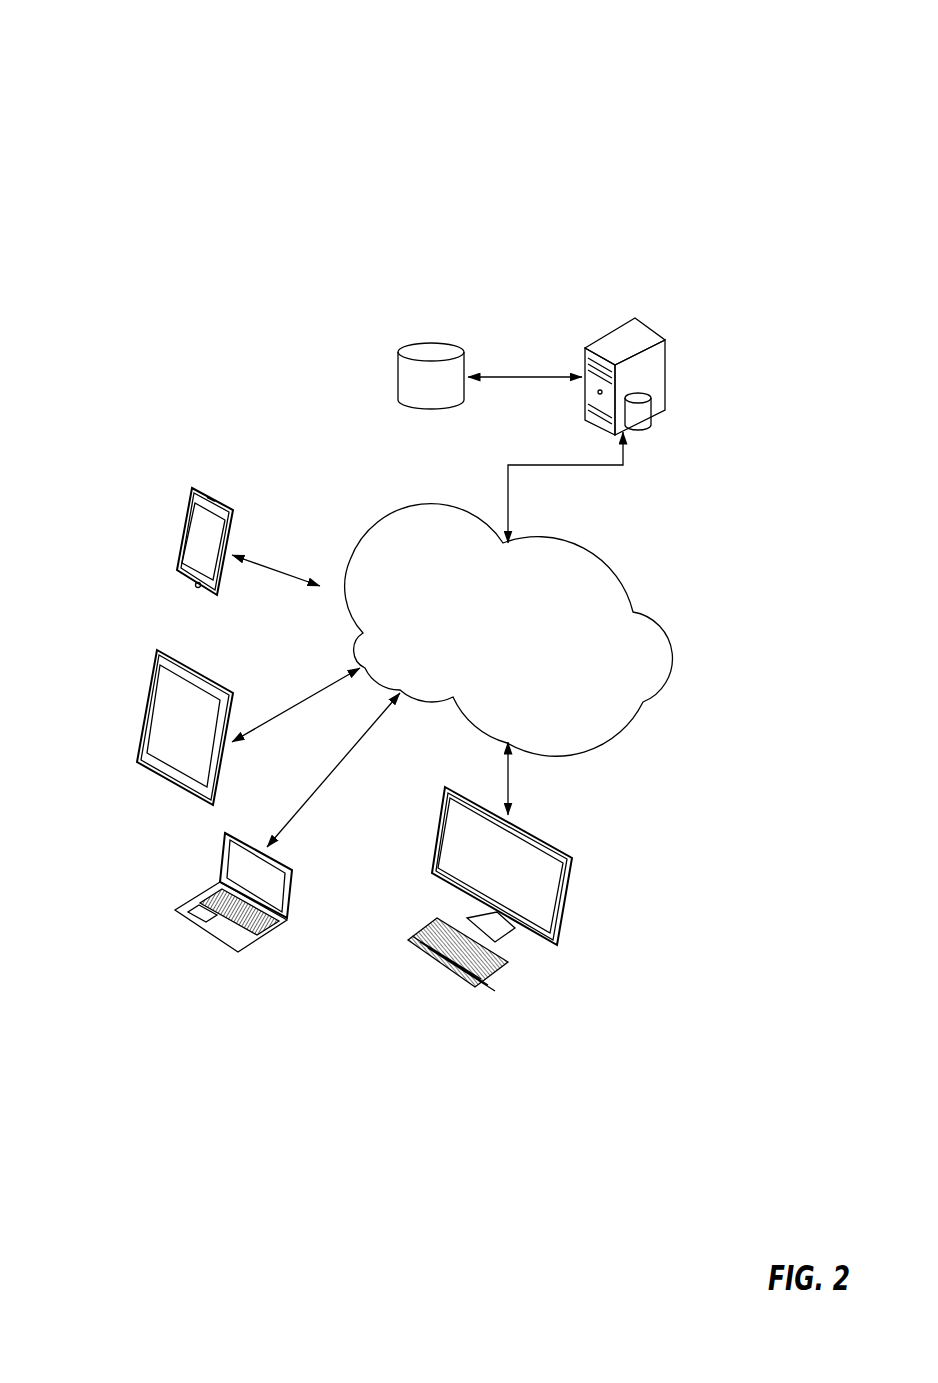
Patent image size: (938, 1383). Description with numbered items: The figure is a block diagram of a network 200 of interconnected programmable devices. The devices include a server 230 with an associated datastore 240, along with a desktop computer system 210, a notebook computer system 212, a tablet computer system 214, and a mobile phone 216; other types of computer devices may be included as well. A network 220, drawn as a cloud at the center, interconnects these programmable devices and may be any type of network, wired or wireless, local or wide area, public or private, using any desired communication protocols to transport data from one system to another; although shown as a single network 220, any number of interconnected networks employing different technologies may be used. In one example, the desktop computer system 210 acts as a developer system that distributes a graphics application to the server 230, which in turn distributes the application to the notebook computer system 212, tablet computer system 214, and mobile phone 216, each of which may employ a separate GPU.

The network of interconnected programmable devices 200 is at (130, 55).
The desktop computer system 210 is at (570, 908).
The notebook computer system 212 is at (267, 933).
The tablet computer system 214 is at (173, 787).
The mobile phone 216 is at (187, 530).
The network 220 is at (698, 658).
The server 230 is at (668, 363).
The datastore 240 is at (433, 345).